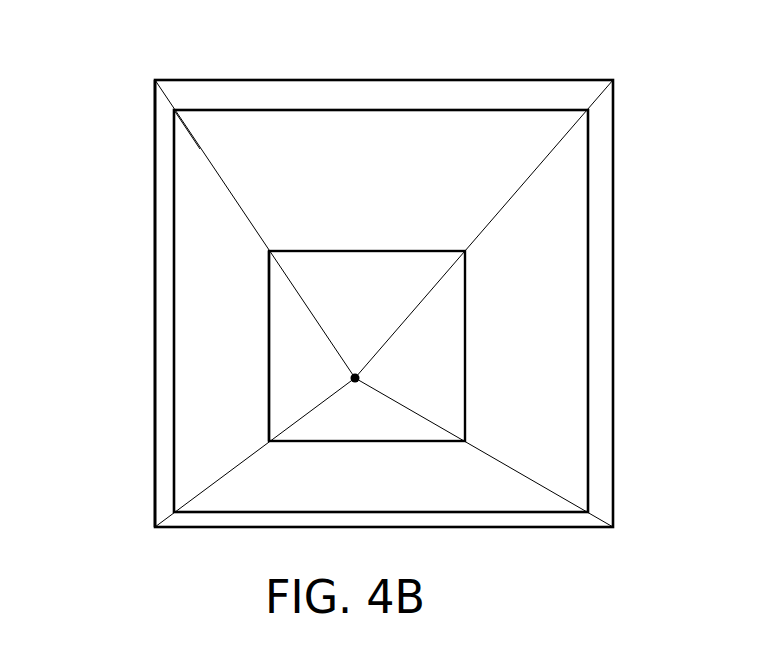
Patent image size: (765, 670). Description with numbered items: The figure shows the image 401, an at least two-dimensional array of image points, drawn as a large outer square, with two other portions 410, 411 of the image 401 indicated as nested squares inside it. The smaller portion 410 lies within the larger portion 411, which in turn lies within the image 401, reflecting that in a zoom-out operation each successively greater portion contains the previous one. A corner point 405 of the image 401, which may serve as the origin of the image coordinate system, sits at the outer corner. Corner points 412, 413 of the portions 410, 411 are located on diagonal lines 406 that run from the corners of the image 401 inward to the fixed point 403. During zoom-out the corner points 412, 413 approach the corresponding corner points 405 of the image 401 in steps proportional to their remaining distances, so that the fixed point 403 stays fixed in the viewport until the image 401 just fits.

The image 401 is at (155, 184).
The fixed point 403 is at (360, 378).
The corner point of the image 405 is at (155, 80).
The diagonal fold line 406 is at (217, 174).
The portion of the image 410 is at (269, 358).
The portion of the image 411 is at (174, 325).
The corner point of a portion 412 is at (271, 250).
The corner point of a portion 413 is at (176, 110).